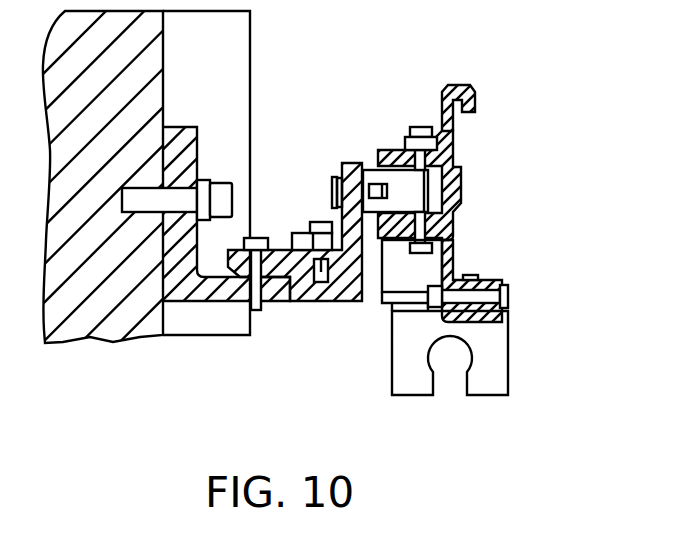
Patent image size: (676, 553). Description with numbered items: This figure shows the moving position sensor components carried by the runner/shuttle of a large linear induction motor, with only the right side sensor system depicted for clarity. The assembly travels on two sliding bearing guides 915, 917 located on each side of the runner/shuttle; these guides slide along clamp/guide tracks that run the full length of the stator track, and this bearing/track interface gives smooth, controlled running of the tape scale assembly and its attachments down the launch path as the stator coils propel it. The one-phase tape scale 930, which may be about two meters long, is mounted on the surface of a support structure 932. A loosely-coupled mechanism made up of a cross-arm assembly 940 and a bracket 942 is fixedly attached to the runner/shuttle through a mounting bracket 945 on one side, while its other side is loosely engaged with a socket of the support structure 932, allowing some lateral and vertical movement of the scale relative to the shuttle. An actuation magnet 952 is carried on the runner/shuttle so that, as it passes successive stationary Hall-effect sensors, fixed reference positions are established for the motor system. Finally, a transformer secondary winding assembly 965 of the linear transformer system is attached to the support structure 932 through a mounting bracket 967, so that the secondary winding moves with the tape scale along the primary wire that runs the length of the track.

The sliding bearing guide 915 is at (476, 95).
The sliding bearing guide 917 is at (468, 273).
The one-phase tape scale 930 is at (463, 193).
The support structure 932 is at (387, 150).
The cross-arm assembly 940 is at (339, 301).
The bracket 942 is at (303, 302).
The mounting bracket 945 is at (187, 126).
The actuation magnet 952 is at (508, 297).
The transformer secondary winding assembly 965 is at (498, 380).
The mounting bracket 967 is at (388, 303).